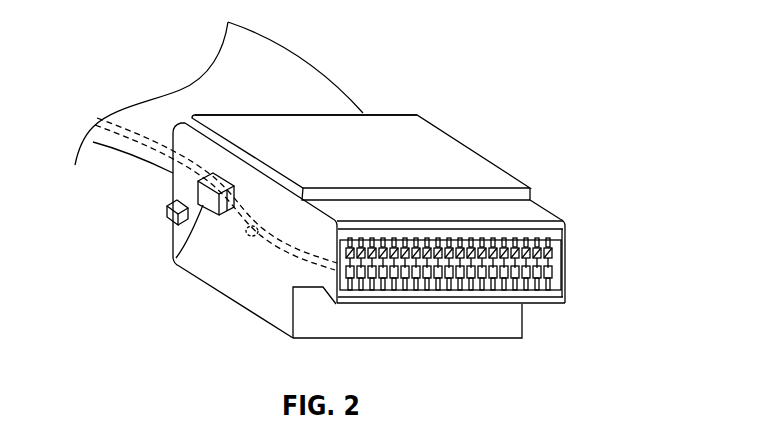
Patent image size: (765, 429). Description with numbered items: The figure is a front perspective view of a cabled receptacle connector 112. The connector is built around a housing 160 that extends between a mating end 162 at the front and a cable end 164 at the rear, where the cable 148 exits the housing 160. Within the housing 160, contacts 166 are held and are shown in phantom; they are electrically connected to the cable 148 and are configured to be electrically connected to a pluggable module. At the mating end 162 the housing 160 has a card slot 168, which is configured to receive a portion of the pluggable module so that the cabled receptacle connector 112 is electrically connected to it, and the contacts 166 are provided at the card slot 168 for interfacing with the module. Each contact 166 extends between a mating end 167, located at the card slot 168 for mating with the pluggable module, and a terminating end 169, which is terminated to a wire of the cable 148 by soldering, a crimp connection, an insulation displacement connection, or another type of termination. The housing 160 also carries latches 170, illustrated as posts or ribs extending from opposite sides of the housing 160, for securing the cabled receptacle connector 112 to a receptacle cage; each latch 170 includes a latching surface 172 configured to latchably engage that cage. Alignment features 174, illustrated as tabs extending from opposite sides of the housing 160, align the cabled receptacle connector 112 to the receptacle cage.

The cabled receptacle connector 112 is at (459, 116).
The cable 148 is at (253, 47).
The housing 160 is at (465, 158).
The mating end 162 is at (441, 295).
The cable end 164 is at (387, 114).
The contacts 166 is at (538, 250).
The mating end 167 is at (350, 265).
The card slot 168 is at (556, 261).
The terminating end 169 is at (248, 222).
The latches 170 is at (175, 265).
The latching surface 172 is at (200, 190).
The alignment features 174 is at (168, 210).